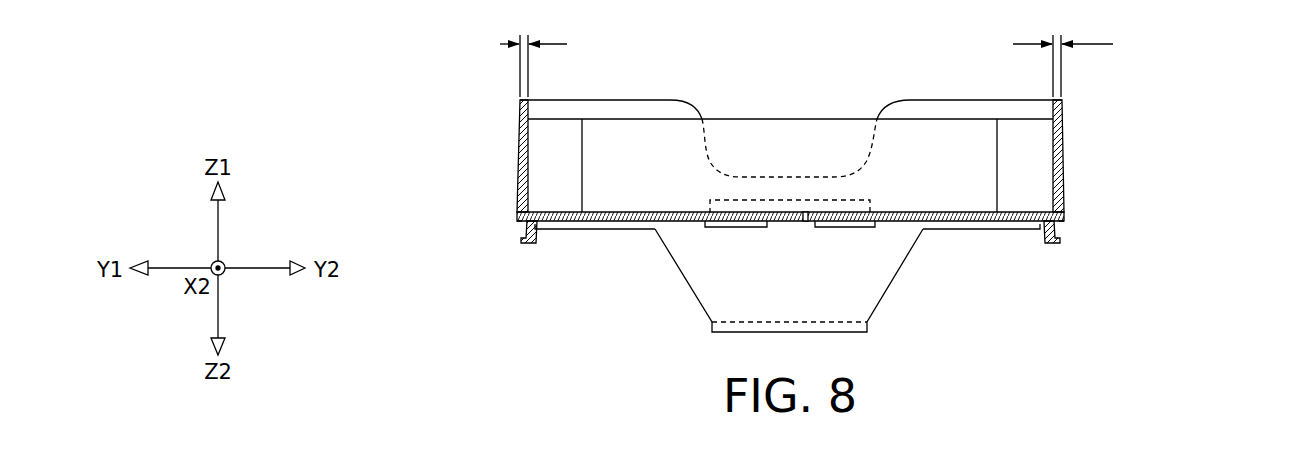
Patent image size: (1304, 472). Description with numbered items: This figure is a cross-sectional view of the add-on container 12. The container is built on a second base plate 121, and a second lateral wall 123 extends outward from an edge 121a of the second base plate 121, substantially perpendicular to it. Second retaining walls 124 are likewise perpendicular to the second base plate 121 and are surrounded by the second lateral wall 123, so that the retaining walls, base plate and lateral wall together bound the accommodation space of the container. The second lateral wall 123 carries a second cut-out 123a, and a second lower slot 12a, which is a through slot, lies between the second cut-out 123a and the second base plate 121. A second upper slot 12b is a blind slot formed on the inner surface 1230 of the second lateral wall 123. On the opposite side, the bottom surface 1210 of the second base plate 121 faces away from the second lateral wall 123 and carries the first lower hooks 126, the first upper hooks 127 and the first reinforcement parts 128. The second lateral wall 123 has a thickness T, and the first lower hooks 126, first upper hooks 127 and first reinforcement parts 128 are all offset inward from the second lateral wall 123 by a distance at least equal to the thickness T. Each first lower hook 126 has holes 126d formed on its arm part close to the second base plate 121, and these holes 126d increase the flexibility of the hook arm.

The add-on container 12 is at (1246, 89).
The second lower slot 12a is at (861, 197).
The second upper slot 12b is at (530, 117).
The second base plate 121 is at (808, 224).
The edge of the second base plate 121a is at (519, 224).
The bottom surface 1210 is at (777, 229).
The second lateral wall 123 is at (520, 153).
The second cut-out 123a is at (795, 158).
The inner surface 1230 is at (533, 178).
The second retaining wall 124 is at (661, 175).
The first lower hook 126 is at (909, 279).
The hole 126d is at (727, 229).
The first upper hook 127 is at (537, 247).
The first reinforcement part 128 is at (585, 222).
The thickness T is at (792, 60).